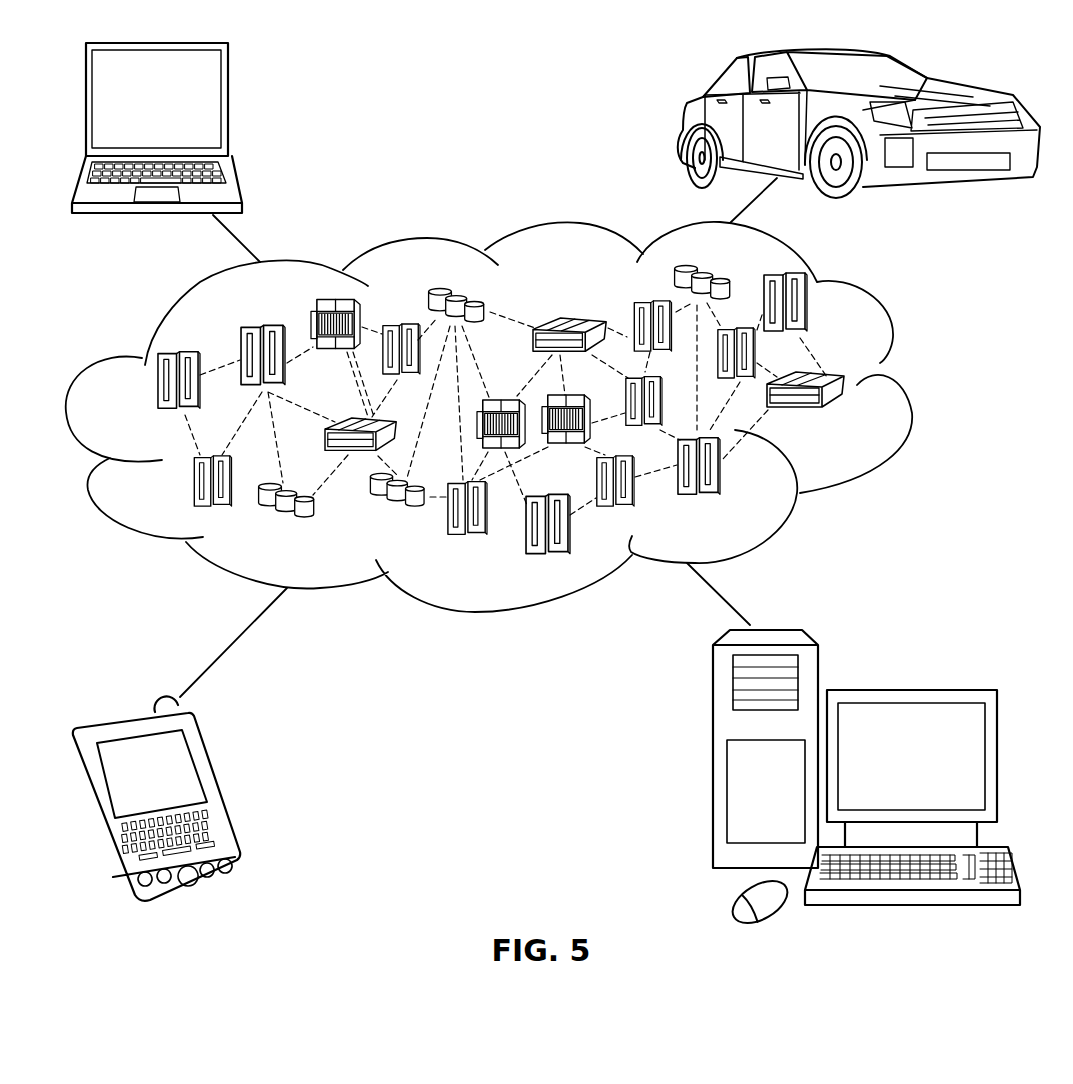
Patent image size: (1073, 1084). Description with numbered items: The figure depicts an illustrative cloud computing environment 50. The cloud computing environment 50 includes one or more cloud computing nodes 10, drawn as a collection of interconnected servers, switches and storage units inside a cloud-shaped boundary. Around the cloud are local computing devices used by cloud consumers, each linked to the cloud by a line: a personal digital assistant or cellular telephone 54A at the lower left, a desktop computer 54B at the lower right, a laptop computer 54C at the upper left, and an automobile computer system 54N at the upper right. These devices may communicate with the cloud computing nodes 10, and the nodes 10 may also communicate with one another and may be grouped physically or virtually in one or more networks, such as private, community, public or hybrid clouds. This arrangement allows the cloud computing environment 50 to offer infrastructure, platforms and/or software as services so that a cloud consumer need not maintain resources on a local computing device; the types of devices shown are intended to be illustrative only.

The cloud computing environment 50 is at (523, 417).
The cloud computing node 10 is at (853, 425).
The personal digital assistant or cellular telephone 54A is at (221, 788).
The desktop computer 54B is at (908, 688).
The laptop computer 54C is at (229, 108).
The automobile computer system 54N is at (681, 121).